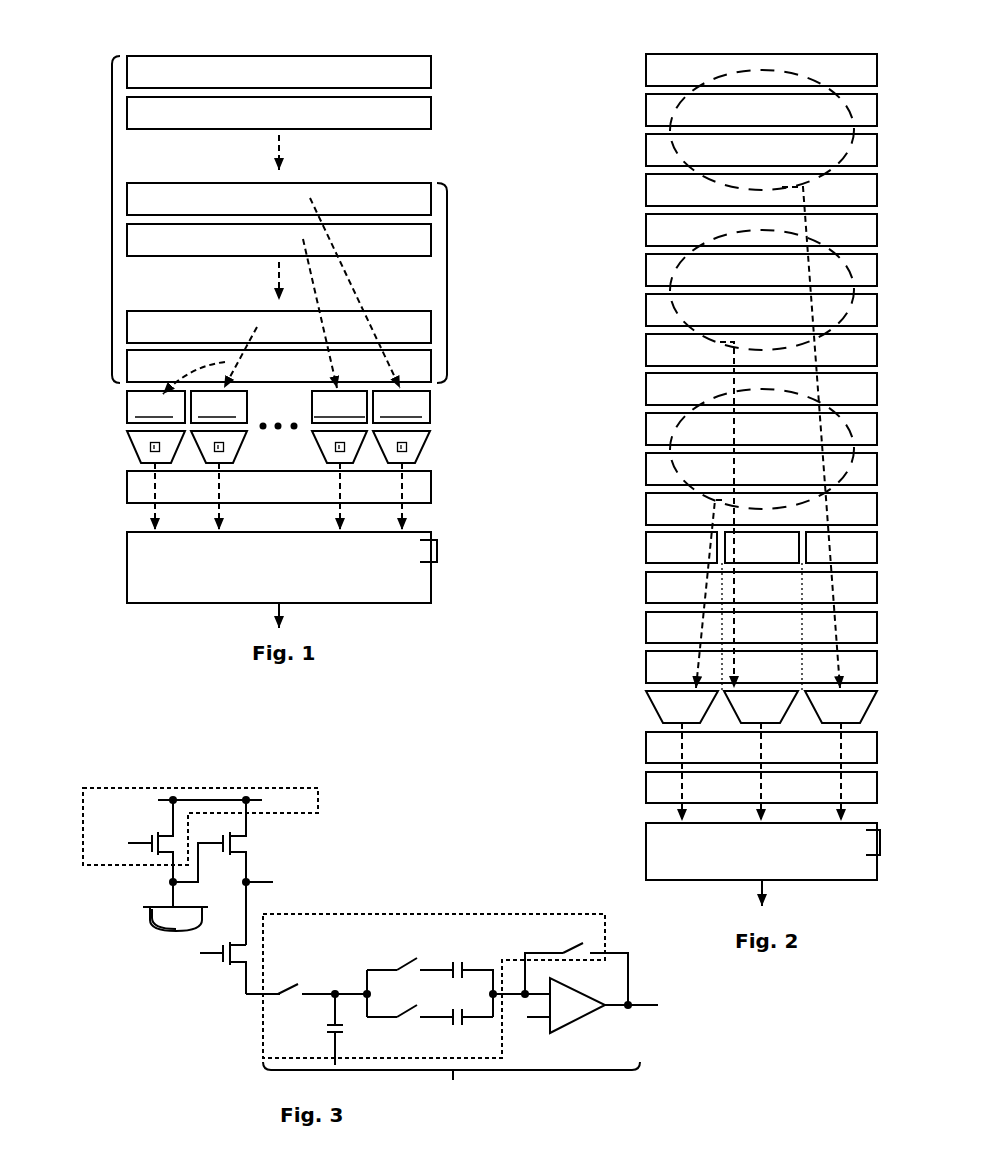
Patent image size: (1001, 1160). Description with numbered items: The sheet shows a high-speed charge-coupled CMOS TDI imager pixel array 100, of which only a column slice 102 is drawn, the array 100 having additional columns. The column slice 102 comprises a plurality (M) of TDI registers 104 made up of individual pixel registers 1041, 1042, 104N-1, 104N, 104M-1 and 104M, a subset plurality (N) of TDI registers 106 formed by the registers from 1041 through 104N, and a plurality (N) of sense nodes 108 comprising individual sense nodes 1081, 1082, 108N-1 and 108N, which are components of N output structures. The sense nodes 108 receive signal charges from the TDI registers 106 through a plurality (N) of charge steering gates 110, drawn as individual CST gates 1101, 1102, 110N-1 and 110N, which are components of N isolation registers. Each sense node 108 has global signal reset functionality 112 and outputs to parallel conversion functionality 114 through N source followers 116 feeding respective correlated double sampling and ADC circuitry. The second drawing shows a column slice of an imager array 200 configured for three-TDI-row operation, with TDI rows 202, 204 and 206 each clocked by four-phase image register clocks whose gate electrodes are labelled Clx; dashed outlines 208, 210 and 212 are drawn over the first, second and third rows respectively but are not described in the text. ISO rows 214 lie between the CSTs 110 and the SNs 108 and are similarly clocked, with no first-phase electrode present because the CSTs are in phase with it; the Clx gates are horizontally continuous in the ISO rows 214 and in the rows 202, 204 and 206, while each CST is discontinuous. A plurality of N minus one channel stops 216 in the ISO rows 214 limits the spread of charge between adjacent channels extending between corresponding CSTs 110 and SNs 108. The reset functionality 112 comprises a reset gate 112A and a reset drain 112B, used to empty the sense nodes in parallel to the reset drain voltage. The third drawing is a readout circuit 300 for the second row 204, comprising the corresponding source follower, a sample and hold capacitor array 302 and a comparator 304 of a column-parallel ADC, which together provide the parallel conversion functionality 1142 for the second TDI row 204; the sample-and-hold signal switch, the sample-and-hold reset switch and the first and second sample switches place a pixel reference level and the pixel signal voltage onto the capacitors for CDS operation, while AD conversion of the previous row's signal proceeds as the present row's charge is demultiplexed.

In FIG. 1, the pixel array 100 is at (86, 44).
In FIG. 1, the column slice 102 is at (86, 116).
In FIG. 1, the TDI registers 104 is at (112, 220).
In FIG. 1, the TDI register 104M is at (431, 60).
In FIG. 1, the TDI register 104M-1 is at (431, 103).
In FIG. 1, the TDI register 104N is at (183, 183).
In FIG. 1, the TDI register 104N-1 is at (180, 257).
In FIG. 1, the TDI register 1042 is at (127, 325).
In FIG. 1, the TDI register 1041 is at (127, 360).
In FIG. 1, the plurality of TDI registers 106 is at (447, 283).
In FIG. 1, the charge steering gates 110 is at (437, 391).
In FIG. 2, the charge steering gates 110 is at (880, 532).
In FIG. 1, the charge steering gate 1101 is at (156, 407).
In FIG. 1, the charge steering gate 1102 is at (219, 407).
In FIG. 1, the charge steering gate 110N-1 is at (340, 407).
In FIG. 1, the charge steering gate 110N is at (401, 407).
In FIG. 1, the sense nodes 108 is at (437, 432).
In FIG. 2, the sense nodes 108 is at (880, 691).
In FIG. 1, the sense node 1081 is at (133, 445).
In FIG. 1, the sense node 1082 is at (200, 452).
In FIG. 3, the sense node 1082 is at (160, 930).
In FIG. 1, the sense node 108N-1 is at (312, 436).
In FIG. 1, the sense node 108N is at (421, 452).
In FIG. 1, the global signal reset functionality 112 is at (297, 500).
In FIG. 2, the global signal reset functionality 112 is at (764, 772).
In FIG. 3, the global signal reset functionality 112 is at (318, 800).
In FIG. 2, the reset gate 112A is at (877, 745).
In FIG. 2, the reset drain 112B is at (877, 785).
In FIG. 1, the parallel conversion functionality 114 is at (297, 599).
In FIG. 2, the parallel conversion functionality 114 is at (780, 877).
In FIG. 3, the parallel conversion functionality 1142 is at (451, 1086).
In FIG. 1, the source followers 116 is at (437, 551).
In FIG. 2, the source followers 116 is at (880, 842).
In FIG. 2, the imager array 200 is at (626, 100).
In FIG. 2, the TDI row 202 is at (880, 373).
In FIG. 2, the TDI row 204 is at (880, 214).
In FIG. 2, the TDI row 206 is at (880, 54).
In FIG. 2, the pixel region 1 208 is at (675, 437).
In FIG. 2, the pixel region 2 210 is at (675, 272).
In FIG. 3, the pixel region 2 210 is at (124, 907).
In FIG. 2, the pixel region 3 212 is at (675, 147).
In FIG. 2, the ISO rows 214 is at (630, 550).
In FIG. 2, the channel stops 216 is at (723, 667).
In FIG. 3, the readout circuit 300 is at (110, 771).
In FIG. 3, the sample and hold capacitor array 302 is at (443, 913).
In FIG. 3, the comparator 304 is at (592, 1030).